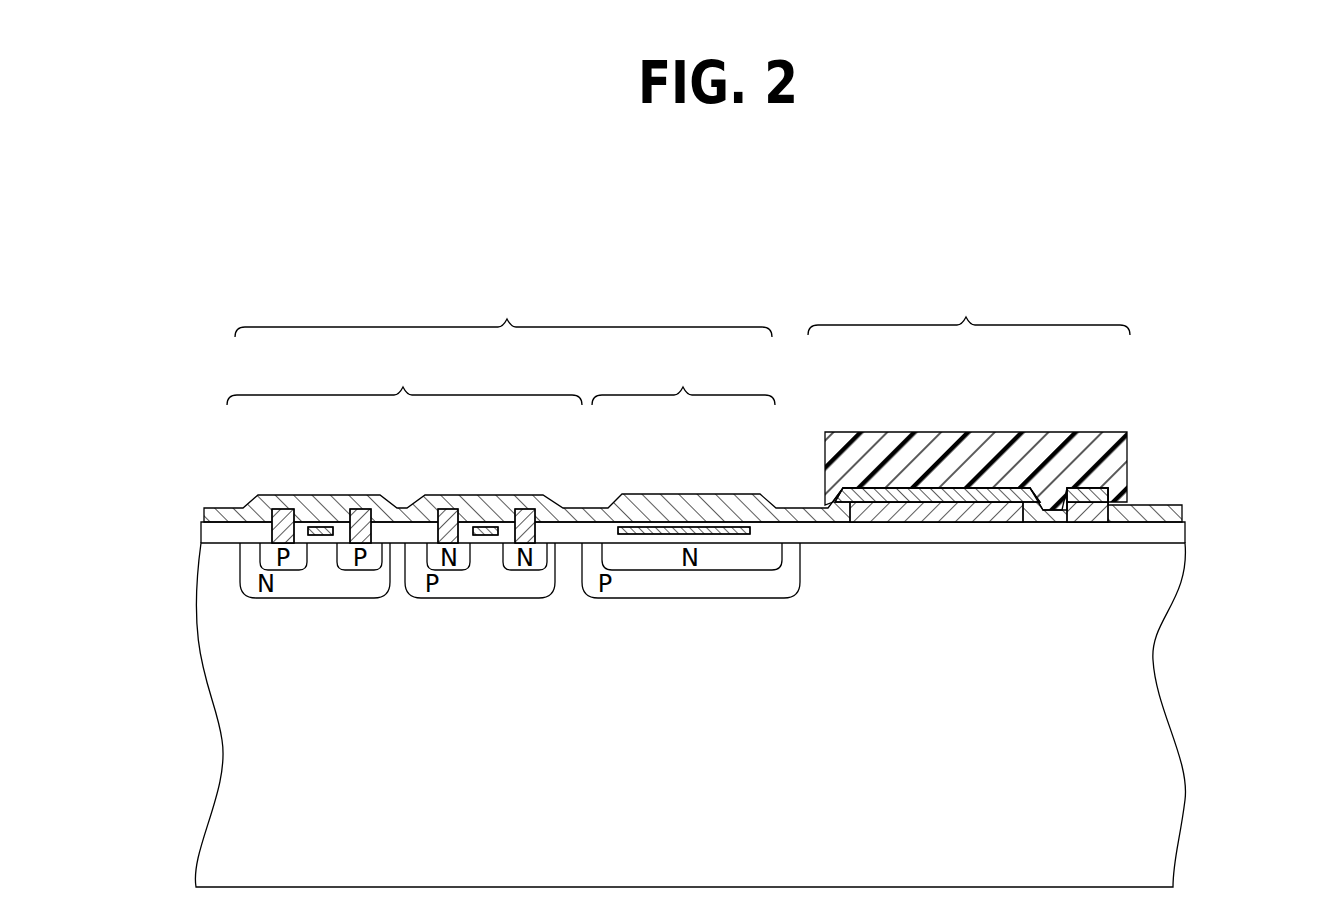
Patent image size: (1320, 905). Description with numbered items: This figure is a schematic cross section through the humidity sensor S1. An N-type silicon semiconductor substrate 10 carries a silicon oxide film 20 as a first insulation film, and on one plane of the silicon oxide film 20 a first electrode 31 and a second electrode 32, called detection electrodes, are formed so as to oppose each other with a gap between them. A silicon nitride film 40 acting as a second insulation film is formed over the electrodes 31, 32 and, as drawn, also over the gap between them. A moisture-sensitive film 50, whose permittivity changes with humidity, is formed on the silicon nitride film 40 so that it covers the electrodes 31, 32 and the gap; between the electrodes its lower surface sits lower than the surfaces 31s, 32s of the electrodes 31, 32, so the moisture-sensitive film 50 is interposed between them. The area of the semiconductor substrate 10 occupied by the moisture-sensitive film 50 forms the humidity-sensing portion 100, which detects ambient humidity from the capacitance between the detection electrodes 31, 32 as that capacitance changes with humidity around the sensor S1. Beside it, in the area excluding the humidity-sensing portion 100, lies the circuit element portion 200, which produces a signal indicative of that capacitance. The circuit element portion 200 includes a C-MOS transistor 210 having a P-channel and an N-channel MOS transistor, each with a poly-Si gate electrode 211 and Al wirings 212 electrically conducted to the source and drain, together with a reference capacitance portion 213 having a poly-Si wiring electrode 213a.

The semiconductor substrate 10 is at (1172, 762).
The silicon oxide film 20 is at (1172, 532).
The silicon nitride film 40 is at (1170, 505).
The moisture-sensitive film 50 is at (1127, 450).
The first electrode 31 is at (1000, 502).
The surface of the first electrode 31s is at (950, 488).
The second electrode 32 is at (1113, 502).
The surface of the second electrode 32s is at (1100, 495).
The humidity-sensing portion 100 is at (969, 308).
The circuit element portion 200 is at (503, 309).
The C-MOS transistor 210 is at (404, 378).
The gate electrode 211 is at (323, 527).
The Al wirings 212 is at (283, 509).
The reference capacitance portion 213 is at (683, 378).
The wiring electrode 213a is at (682, 527).
The sensor S1 is at (666, 286).